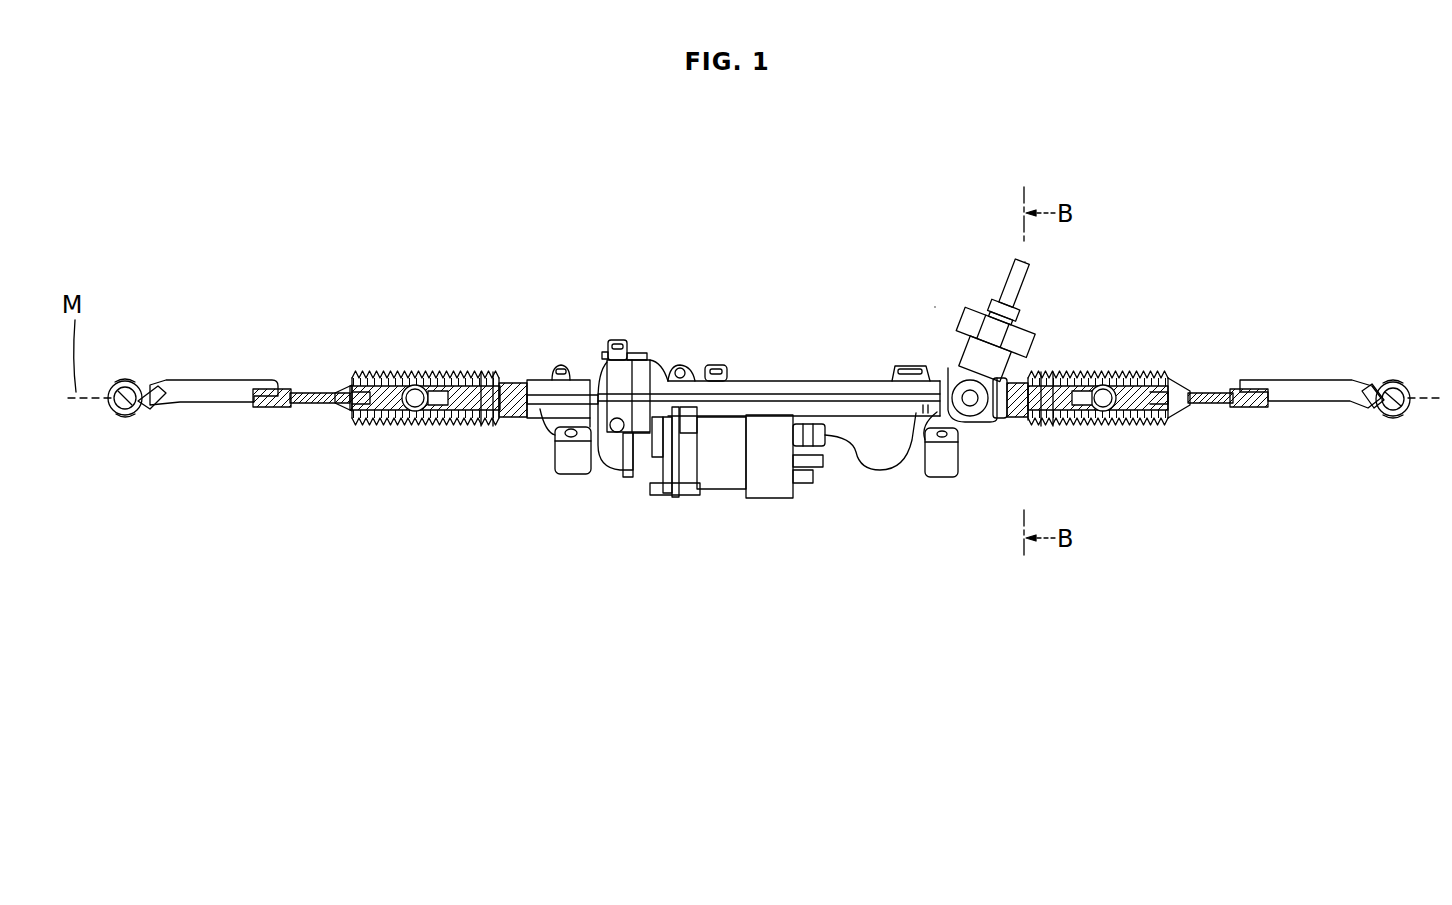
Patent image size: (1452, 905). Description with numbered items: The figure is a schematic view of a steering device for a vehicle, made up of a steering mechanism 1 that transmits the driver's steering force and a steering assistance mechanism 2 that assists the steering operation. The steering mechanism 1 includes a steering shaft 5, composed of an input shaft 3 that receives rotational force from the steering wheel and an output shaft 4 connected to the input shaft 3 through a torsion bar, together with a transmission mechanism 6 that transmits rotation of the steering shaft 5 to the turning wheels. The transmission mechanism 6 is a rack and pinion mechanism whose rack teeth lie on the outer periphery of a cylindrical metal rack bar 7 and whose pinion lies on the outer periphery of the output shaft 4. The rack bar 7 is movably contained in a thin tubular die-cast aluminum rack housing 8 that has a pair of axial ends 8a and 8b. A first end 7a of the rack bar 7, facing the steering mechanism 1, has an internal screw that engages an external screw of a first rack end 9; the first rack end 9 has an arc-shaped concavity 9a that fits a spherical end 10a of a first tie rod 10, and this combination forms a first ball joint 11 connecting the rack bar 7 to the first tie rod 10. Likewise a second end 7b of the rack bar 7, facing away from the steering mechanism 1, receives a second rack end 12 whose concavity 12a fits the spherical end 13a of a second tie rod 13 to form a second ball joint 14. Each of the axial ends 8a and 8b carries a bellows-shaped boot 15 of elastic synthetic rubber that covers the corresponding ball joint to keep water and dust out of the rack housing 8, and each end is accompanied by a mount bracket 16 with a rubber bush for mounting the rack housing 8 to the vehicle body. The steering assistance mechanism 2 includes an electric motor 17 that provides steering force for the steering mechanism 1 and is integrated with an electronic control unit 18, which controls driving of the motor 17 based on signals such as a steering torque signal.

The steering mechanism 1 is at (936, 307).
The steering assistance mechanism 2 is at (590, 515).
The input shaft 3 is at (1022, 277).
The output shaft 4 is at (1010, 340).
The steering shaft 5 is at (1122, 243).
The transmission mechanism 6 is at (905, 470).
The rack bar 7 is at (1075, 430).
The first end 7a is at (1035, 375).
The second end 7b is at (455, 375).
The rack housing 8 is at (735, 380).
The axial end 8a is at (1032, 432).
The axial end 8b is at (490, 430).
The first rack end 9 is at (1105, 390).
The concavity 9a is at (1125, 430).
The first tie rod 10 is at (1235, 395).
The spherical end 10a is at (1165, 430).
The first ball joint 11 is at (1246, 518).
The second rack end 12 is at (413, 385).
The concavity 12a is at (417, 428).
The second tie rod 13 is at (340, 380).
The spherical end 13a is at (385, 428).
The second ball joint 14 is at (445, 505).
The boot 15 is at (480, 375).
The mount bracket 16 is at (570, 460).
The motor 17 is at (718, 473).
The electronic control unit 18 is at (768, 487).